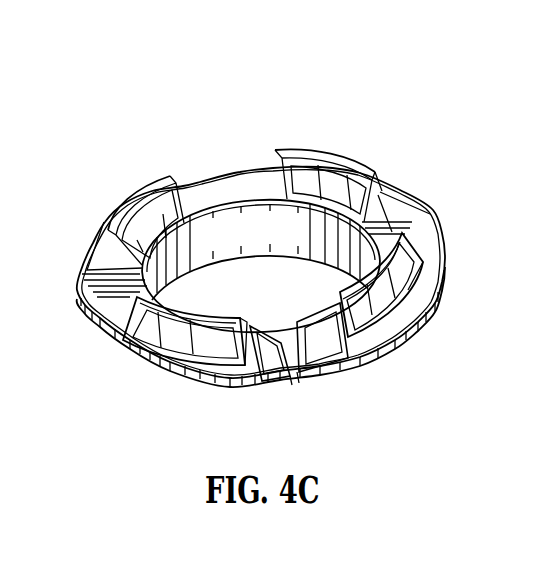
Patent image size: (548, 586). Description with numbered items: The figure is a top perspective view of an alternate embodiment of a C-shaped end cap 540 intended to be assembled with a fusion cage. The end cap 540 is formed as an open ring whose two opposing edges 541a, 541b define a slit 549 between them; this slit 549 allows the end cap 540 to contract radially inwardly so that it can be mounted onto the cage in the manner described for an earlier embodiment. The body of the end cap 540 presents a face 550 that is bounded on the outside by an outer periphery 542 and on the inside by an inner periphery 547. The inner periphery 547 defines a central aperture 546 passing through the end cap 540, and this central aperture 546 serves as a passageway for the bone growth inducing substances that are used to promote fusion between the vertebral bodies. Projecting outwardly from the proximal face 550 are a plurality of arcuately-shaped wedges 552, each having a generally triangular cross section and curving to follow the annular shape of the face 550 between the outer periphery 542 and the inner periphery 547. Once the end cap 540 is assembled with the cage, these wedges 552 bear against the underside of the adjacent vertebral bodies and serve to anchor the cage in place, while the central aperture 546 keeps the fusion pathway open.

The C-shaped end cap 540 is at (300, 243).
The outer periphery 542 is at (420, 322).
The central aperture 546 is at (283, 292).
The inner periphery 547 is at (248, 232).
The face 550 is at (200, 197).
The arcuately-shaped wedges 552 is at (433, 252).
The slit 549 is at (304, 389).
The opposing edge 541a is at (270, 368).
The opposing edge 541b is at (310, 378).